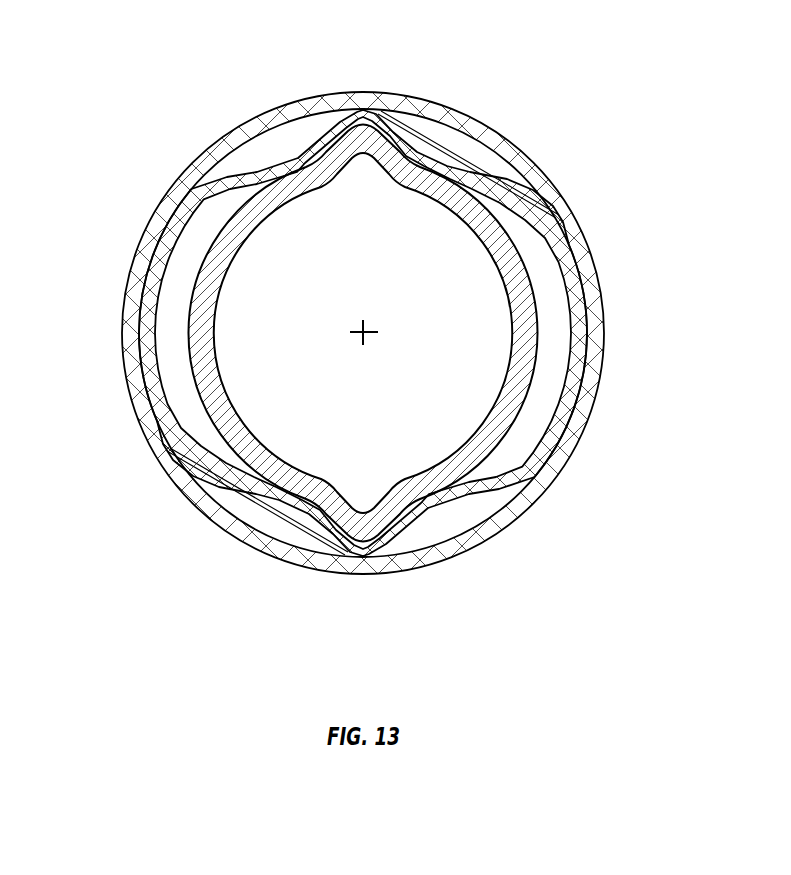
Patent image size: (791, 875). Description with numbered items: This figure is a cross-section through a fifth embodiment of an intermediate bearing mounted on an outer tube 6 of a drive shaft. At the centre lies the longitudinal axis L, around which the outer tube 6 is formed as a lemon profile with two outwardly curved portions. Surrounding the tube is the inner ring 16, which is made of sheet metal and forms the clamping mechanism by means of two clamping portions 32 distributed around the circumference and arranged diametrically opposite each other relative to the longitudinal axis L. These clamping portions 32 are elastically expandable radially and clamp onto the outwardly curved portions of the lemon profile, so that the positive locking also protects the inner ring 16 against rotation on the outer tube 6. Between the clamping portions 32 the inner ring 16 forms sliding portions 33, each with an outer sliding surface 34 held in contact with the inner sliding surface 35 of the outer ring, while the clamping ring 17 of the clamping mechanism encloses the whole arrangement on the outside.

The outer tube 6 is at (200, 343).
The inner ring 16 is at (468, 169).
The clamping ring 17 is at (525, 162).
The clamping portions 32 is at (365, 118).
The sliding portions 33 is at (148, 343).
The outer sliding surface 34 is at (148, 398).
The inner sliding surface 35 is at (145, 292).
The longitudinal axis L is at (368, 317).